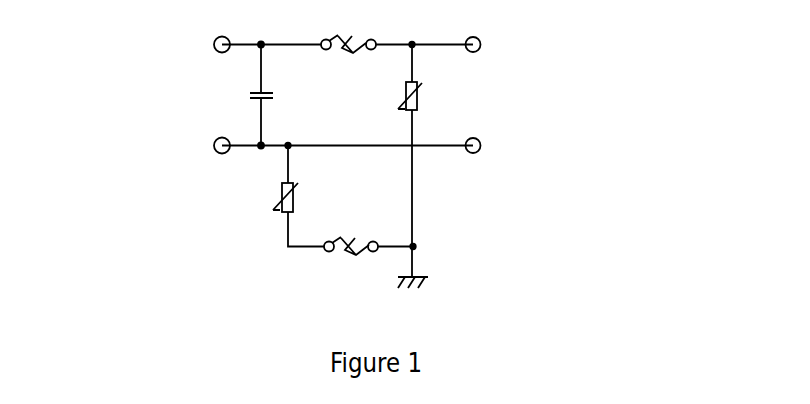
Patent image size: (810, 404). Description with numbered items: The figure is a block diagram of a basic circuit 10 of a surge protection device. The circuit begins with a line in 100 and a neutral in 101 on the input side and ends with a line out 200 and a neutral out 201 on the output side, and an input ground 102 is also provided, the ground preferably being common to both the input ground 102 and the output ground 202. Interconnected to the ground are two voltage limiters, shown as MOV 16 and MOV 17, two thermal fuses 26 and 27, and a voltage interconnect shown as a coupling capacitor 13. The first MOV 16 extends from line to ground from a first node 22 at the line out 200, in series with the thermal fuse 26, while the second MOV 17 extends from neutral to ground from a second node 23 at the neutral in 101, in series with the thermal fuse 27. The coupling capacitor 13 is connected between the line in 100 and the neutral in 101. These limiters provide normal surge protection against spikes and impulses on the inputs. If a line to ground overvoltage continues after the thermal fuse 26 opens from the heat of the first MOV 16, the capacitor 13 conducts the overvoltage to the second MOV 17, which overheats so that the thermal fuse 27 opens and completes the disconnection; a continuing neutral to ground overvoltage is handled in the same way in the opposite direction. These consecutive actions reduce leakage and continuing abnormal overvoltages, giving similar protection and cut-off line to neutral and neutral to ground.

The basic circuit 10 is at (208, 232).
The coupling capacitor 13 is at (243, 97).
The MOV 16 is at (502, 93).
The MOV 17 is at (272, 197).
The first node 22 is at (424, 33).
The neutral node 23 is at (297, 134).
The thermal fuse 26 is at (343, 60).
The thermal fuse 27 is at (345, 265).
The line in 100 is at (152, 46).
The neutral in 101 is at (123, 150).
The input ground 102 is at (405, 263).
The line out 200 is at (597, 35).
The neutral out 201 is at (665, 136).
The output ground 202 is at (418, 263).